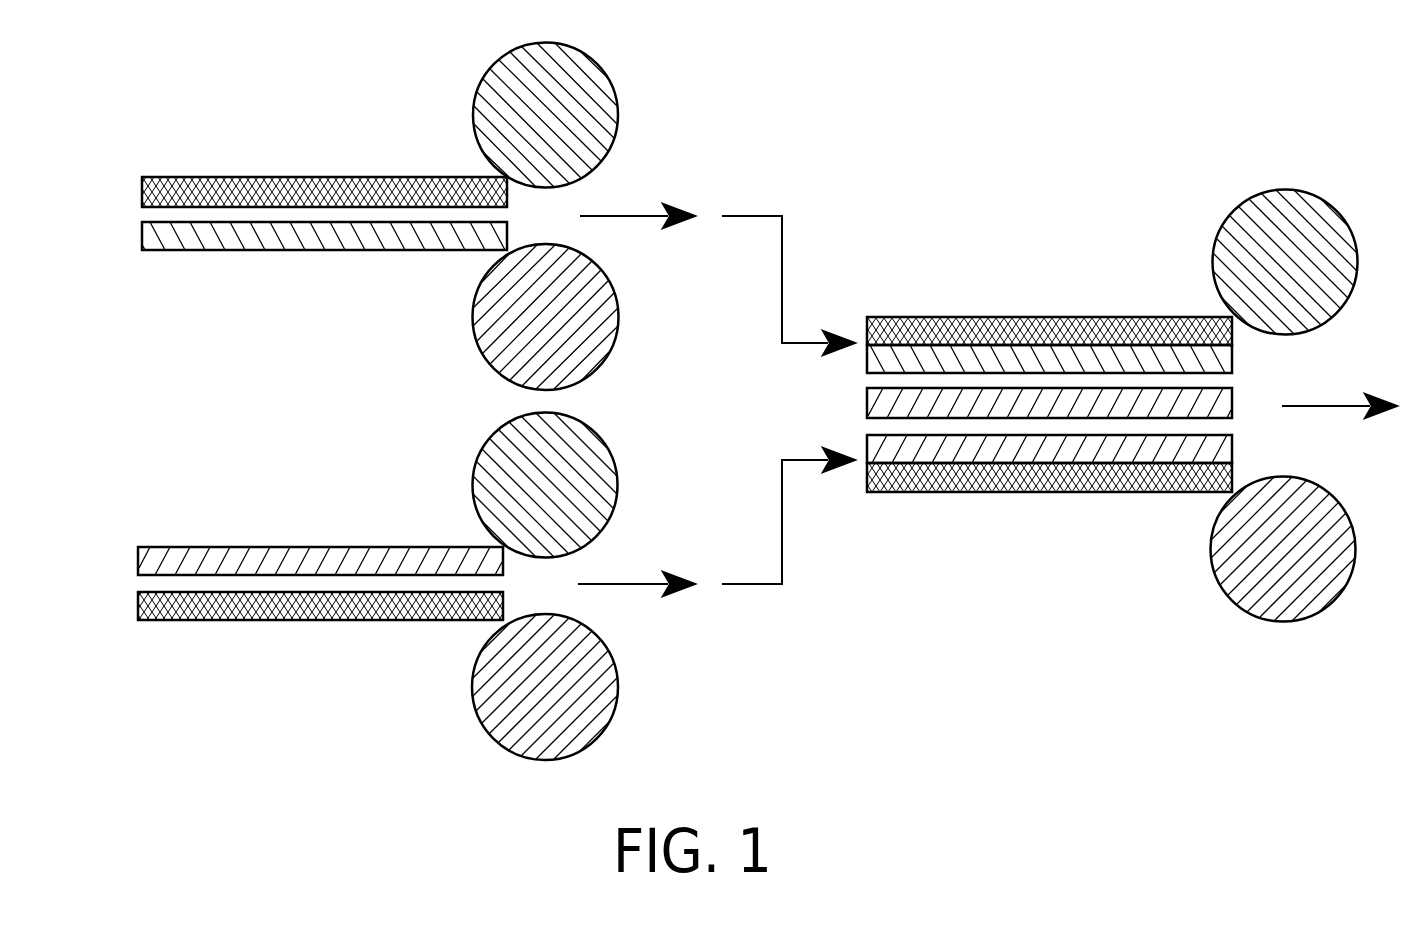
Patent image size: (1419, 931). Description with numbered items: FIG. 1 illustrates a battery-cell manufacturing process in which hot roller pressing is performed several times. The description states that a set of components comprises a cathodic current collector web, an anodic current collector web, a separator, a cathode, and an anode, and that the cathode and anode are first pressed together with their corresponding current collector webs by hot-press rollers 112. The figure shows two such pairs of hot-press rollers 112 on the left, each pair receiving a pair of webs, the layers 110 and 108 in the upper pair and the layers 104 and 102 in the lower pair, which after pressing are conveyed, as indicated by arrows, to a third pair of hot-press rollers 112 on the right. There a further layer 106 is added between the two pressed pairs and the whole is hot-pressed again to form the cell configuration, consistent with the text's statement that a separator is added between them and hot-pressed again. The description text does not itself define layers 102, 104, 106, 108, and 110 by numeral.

The first outer layer (cross-hatched web) 102 is at (232, 620).
The first inner layer (hatched web) 104 is at (232, 547).
The core layer 106 is at (866, 398).
The second inner layer (hatched web) 108 is at (232, 250).
The second outer layer (cross-hatched web) 110 is at (233, 177).
The hot-press rollers 112 is at (473, 109).